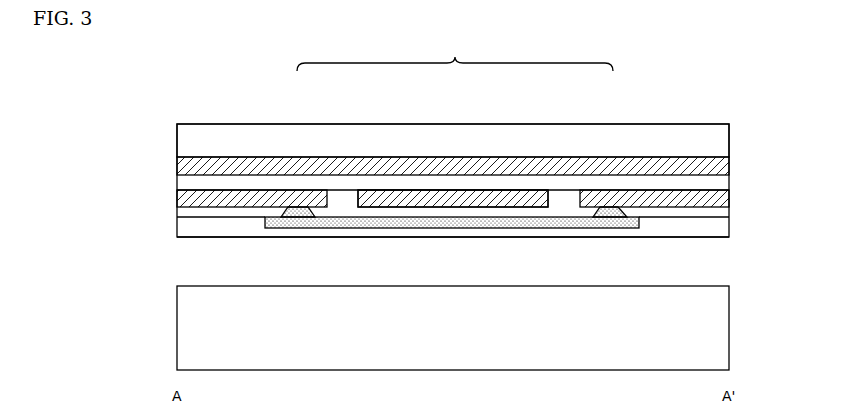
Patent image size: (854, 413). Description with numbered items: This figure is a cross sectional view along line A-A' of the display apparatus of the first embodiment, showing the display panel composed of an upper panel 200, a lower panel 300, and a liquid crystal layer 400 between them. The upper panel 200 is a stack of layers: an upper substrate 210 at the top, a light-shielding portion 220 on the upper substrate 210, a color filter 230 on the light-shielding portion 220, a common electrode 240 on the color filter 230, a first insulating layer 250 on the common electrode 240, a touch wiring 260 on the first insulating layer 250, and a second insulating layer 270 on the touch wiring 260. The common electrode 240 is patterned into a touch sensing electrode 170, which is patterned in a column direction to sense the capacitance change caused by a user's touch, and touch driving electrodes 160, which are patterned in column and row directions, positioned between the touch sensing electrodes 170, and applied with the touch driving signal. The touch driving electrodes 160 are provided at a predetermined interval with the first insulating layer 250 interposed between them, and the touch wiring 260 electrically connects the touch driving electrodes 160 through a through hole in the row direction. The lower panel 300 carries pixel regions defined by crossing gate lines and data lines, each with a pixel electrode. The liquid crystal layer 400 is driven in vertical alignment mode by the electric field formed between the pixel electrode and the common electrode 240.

The touch driving electrode 160 is at (294, 206).
The touch sensing electrode 170 is at (450, 200).
The upper panel 200 is at (163, 124).
The upper substrate 210 is at (729, 135).
The light-shielding portion 220 is at (729, 160).
The color filter 230 is at (729, 180).
The common electrode 240 is at (455, 54).
The first insulating layer 250 is at (729, 212).
The touch wiring 260 is at (641, 224).
The second insulating layer 270 is at (729, 226).
The lower panel 300 is at (163, 288).
The liquid crystal layer 400 is at (163, 239).